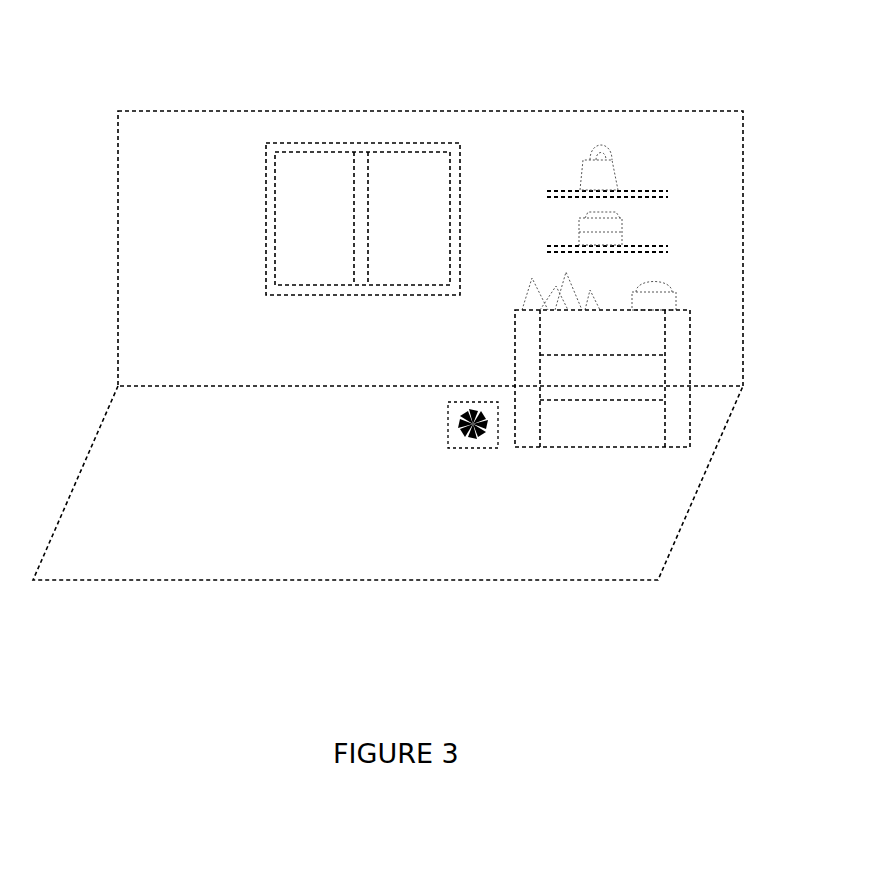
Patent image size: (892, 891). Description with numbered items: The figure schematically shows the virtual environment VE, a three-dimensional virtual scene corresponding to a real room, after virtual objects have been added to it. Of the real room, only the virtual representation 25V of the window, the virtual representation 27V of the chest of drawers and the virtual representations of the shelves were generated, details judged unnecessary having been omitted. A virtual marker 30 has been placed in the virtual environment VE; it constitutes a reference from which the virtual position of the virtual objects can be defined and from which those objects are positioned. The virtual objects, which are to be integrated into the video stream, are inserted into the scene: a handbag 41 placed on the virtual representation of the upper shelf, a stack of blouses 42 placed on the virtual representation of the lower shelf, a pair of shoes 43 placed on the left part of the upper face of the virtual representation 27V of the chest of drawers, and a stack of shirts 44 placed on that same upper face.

The virtual environment VE is at (660, 70).
The virtual representation of the window 25V is at (265, 173).
The handbag 41 is at (625, 165).
The stack of blouses 42 is at (624, 226).
The pair of shoes 43 is at (528, 290).
The stack of shirts 44 is at (672, 292).
The virtual representation of the chest of drawers 27V is at (690, 367).
The virtual marker 30 is at (468, 449).